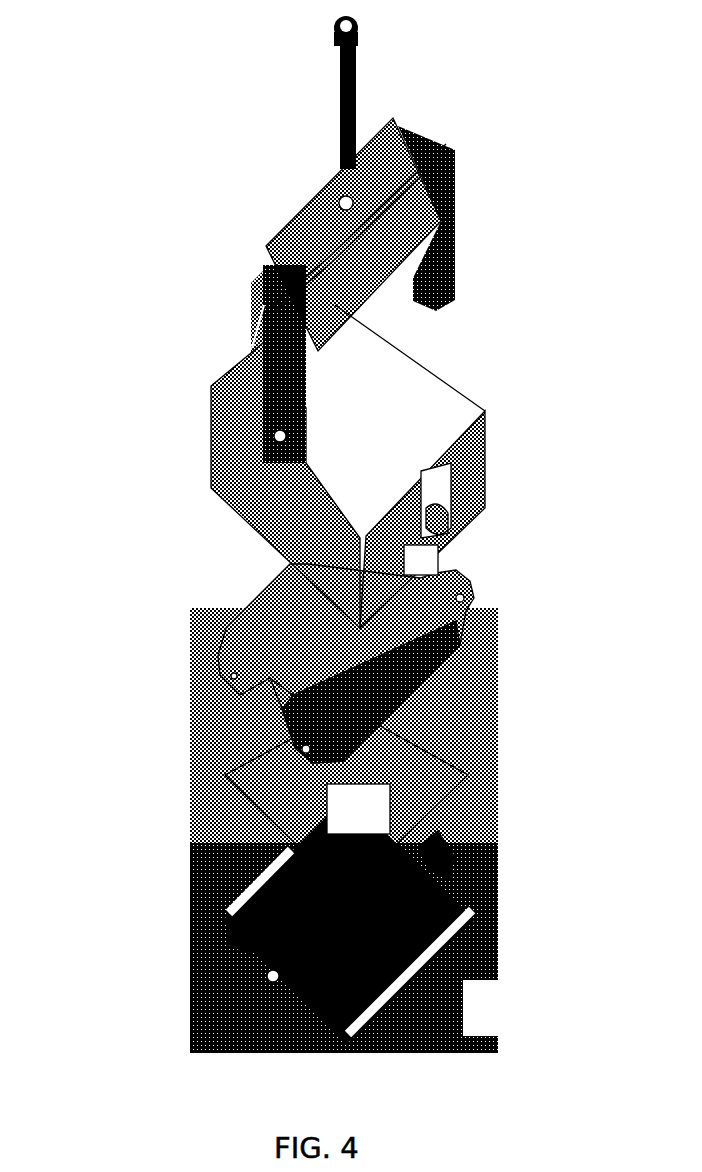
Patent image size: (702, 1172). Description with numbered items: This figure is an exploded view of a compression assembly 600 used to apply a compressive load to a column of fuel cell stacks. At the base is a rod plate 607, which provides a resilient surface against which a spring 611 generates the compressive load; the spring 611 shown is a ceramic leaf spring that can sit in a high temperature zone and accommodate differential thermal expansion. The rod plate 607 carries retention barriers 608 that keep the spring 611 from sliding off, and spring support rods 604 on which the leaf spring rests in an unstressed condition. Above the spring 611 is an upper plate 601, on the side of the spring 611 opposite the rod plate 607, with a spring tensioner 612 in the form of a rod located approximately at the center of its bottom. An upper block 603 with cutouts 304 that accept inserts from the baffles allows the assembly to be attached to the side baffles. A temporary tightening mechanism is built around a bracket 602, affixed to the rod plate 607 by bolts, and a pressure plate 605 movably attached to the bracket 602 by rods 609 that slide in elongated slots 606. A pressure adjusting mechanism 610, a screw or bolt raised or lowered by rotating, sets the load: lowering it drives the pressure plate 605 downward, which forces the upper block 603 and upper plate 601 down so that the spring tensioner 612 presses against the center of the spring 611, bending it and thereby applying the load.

The compression assembly 600 is at (197, 193).
The pressure adjusting mechanism 610 is at (326, 58).
The rods 609 is at (441, 135).
The pressure plate 605 is at (434, 214).
The elongated slots 606 is at (269, 290).
The bracket 602 is at (262, 375).
The upper block 603 is at (445, 397).
The cutouts 304 is at (427, 495).
The upper plate 601 is at (449, 631).
The spring tensioner 612 is at (270, 701).
The spring 611 is at (427, 765).
The retention barriers 608 is at (432, 858).
The rod plate 607 is at (437, 889).
The spring support rods 604 is at (230, 866).